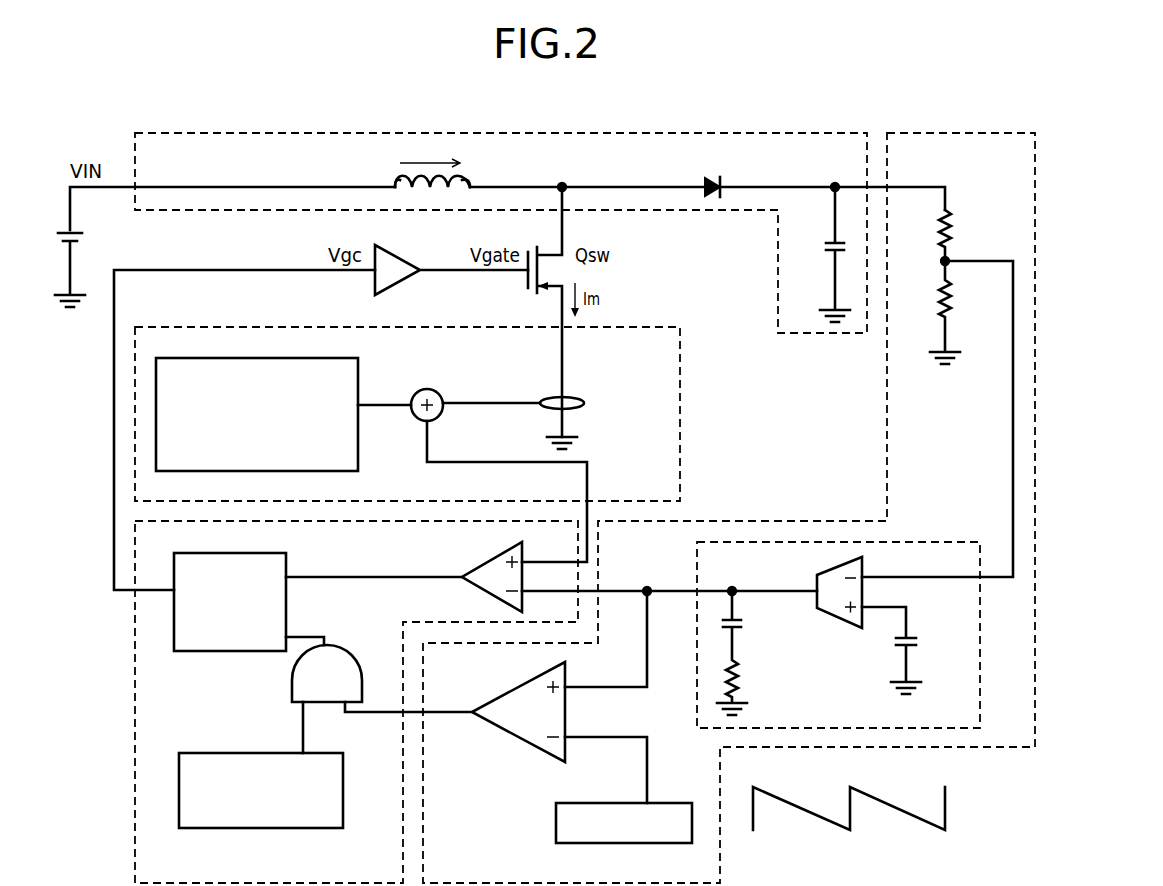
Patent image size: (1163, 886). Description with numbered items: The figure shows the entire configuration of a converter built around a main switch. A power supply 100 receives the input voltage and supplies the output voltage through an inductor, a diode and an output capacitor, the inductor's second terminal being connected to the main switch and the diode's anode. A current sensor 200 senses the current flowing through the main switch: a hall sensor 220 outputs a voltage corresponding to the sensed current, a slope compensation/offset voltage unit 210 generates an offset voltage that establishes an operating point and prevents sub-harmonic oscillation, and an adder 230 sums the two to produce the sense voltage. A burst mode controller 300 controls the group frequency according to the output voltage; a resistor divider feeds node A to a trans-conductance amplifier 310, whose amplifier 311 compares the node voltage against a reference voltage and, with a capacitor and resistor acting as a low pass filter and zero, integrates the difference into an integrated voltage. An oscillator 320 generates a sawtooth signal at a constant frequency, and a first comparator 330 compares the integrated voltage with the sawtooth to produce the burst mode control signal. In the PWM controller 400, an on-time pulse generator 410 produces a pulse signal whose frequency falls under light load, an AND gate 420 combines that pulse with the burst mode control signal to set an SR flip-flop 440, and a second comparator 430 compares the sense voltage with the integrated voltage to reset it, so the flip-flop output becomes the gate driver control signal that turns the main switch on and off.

The power supply 100 is at (800, 333).
The current sensor 200 is at (135, 474).
The slope compensation/offset voltage unit 210 is at (156, 418).
The hall sensor 220 is at (586, 403).
The adder 230 is at (440, 393).
The burst mode controller 300 is at (1035, 653).
The trans-conductance amplifier 310 is at (980, 598).
The amplifier 311 is at (862, 562).
The oscillator 320 is at (556, 835).
The first comparator 330 is at (500, 735).
The PWM controller 400 is at (135, 727).
The on-time pulse generator 410 is at (179, 808).
The AND gate 420 is at (292, 688).
The second comparator 430 is at (492, 553).
The SR flip-flop 440 is at (174, 638).